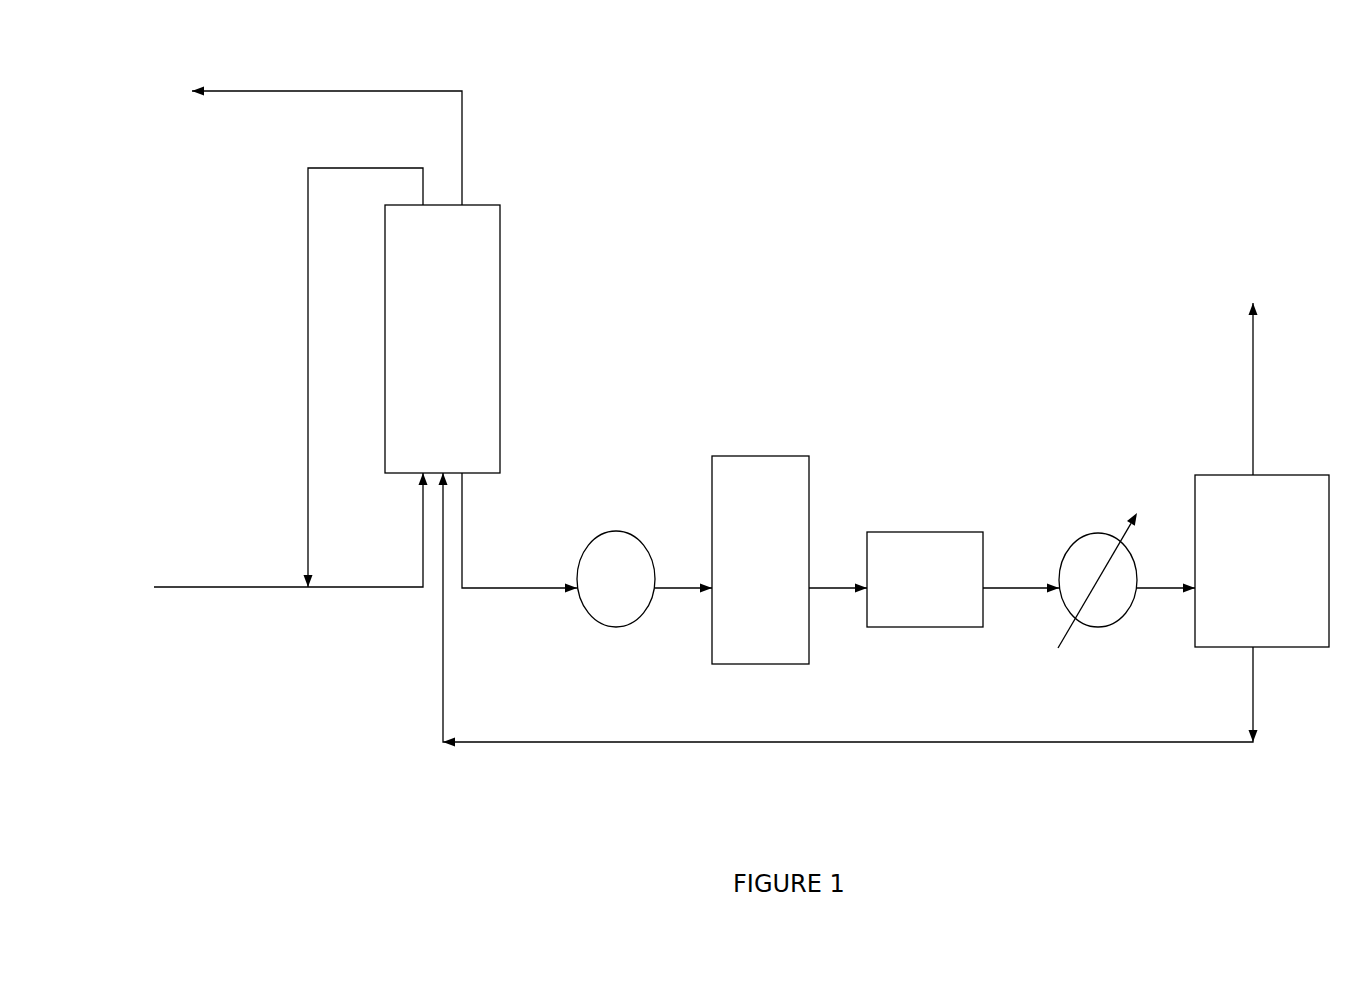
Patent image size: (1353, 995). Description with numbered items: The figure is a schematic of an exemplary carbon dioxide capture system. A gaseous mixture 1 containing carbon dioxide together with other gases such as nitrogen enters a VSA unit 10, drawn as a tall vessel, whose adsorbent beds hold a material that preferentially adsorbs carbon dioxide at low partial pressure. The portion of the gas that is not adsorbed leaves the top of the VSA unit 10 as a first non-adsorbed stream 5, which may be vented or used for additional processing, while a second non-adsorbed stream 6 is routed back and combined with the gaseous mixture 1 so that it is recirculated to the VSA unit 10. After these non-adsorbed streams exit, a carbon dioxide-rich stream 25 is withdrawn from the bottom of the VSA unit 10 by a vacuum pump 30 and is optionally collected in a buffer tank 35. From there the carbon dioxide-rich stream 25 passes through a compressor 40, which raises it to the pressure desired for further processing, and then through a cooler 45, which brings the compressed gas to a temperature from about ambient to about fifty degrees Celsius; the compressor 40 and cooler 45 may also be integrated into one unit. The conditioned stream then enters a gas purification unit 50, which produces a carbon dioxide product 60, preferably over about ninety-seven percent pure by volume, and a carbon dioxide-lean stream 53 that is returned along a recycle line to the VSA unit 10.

The gaseous mixture 1 is at (248, 587).
The first non-adsorbed stream 5 is at (462, 145).
The second non-adsorbed stream 6 is at (308, 283).
The VSA unit 10 is at (500, 343).
The carbon dioxide-rich stream 25 is at (462, 530).
The vacuum pump 30 is at (617, 531).
The buffer tank 35 is at (792, 454).
The compressor 40 is at (945, 532).
The cooler 45 is at (1099, 532).
The gas purification unit 50 is at (1290, 475).
The carbon dioxide-lean stream 53 is at (1002, 742).
The carbon dioxide product 60 is at (1253, 418).